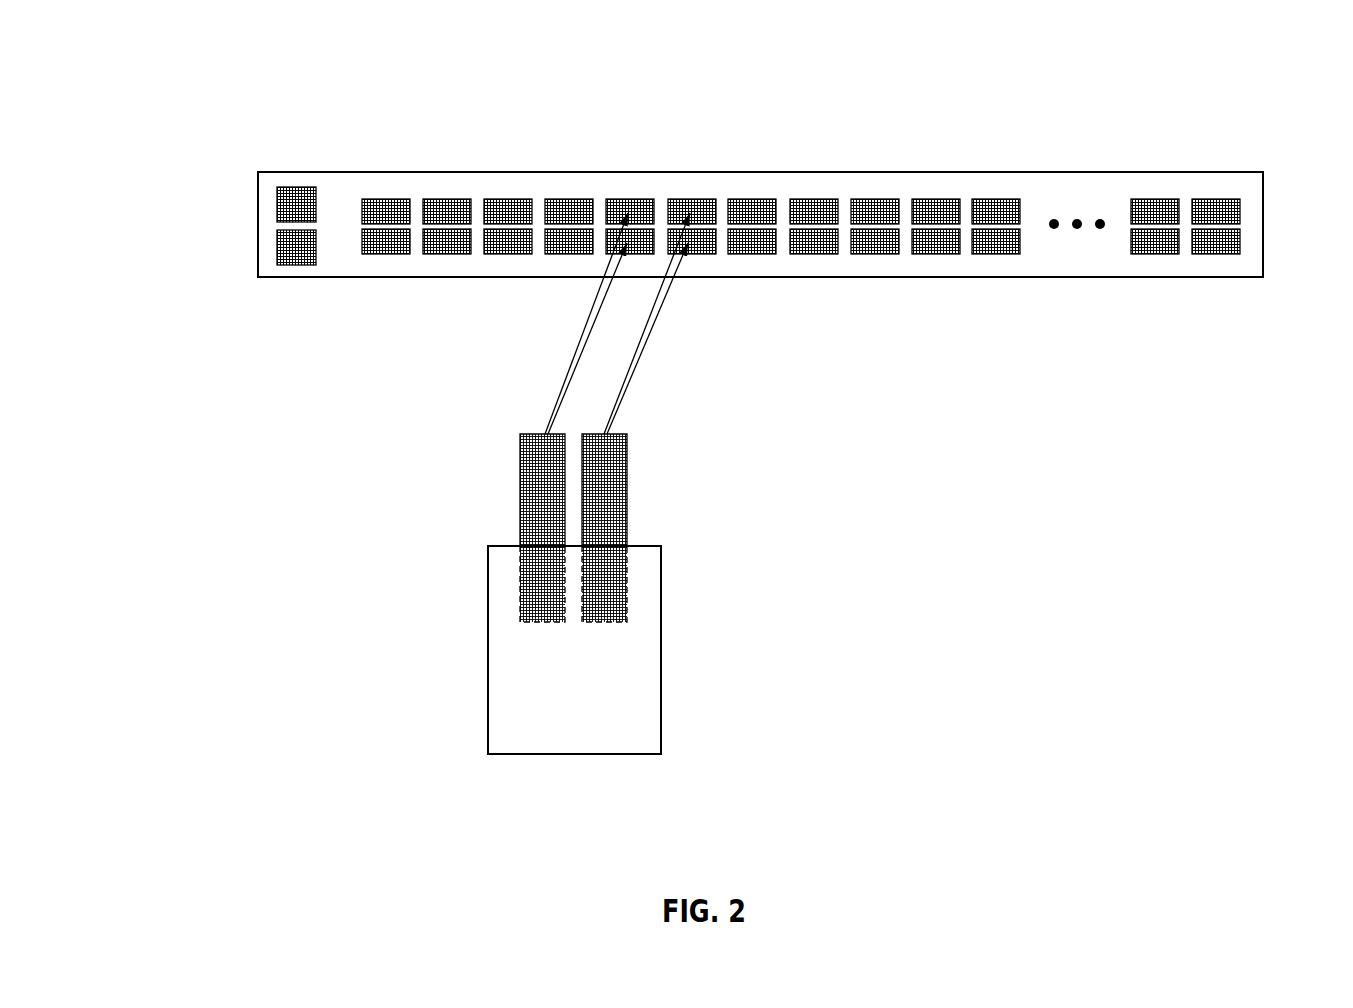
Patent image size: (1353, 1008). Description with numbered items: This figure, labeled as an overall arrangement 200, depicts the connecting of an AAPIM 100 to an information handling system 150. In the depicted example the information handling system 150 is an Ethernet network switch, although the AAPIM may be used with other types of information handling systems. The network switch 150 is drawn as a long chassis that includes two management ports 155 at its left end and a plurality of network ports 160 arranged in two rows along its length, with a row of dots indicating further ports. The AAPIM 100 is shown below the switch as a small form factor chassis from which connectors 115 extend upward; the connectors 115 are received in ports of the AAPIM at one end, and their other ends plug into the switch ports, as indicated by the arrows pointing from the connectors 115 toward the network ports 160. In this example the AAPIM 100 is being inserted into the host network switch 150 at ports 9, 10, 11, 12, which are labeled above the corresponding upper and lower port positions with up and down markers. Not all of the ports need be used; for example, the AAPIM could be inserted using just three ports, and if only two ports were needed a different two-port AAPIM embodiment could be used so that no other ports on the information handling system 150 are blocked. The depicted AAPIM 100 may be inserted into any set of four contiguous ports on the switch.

The system environment 200 is at (688, 18).
The information handling system 150 is at (732, 212).
The management ports 155 is at (273, 200).
The network ports 160 is at (375, 254).
The connectors 115 is at (458, 432).
The AAPIM 100 is at (574, 685).
The port 9 is at (627, 201).
The port 10 is at (631, 216).
The port 11 is at (689, 201).
The port 12 is at (698, 216).